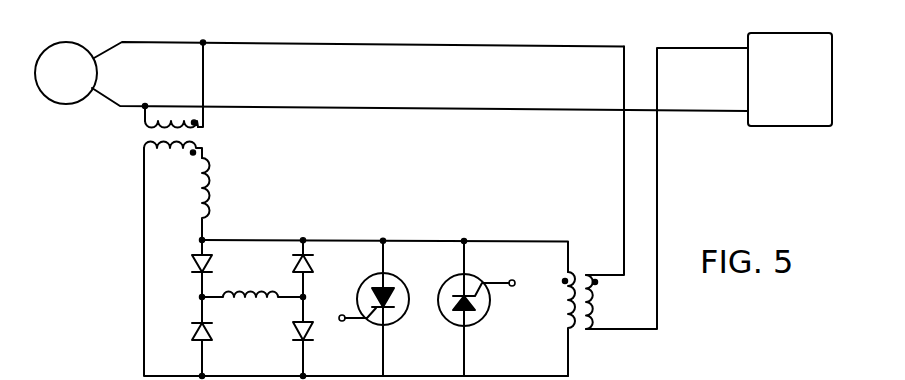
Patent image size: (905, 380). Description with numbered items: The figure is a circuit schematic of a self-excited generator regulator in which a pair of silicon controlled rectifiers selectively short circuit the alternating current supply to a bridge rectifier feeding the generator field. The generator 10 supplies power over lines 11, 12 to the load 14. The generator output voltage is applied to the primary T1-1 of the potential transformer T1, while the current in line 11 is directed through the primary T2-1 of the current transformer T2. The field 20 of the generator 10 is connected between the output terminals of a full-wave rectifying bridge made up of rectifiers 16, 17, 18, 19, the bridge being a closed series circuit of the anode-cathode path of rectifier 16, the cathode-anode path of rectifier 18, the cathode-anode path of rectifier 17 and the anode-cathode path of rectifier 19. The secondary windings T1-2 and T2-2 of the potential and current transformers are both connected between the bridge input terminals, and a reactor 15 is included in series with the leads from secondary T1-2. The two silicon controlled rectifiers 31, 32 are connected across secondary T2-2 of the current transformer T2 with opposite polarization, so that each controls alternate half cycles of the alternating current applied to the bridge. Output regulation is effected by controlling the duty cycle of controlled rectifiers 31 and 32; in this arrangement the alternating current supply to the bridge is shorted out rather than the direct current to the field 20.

The generator 10 is at (59, 36).
The line 11 is at (174, 36).
The line 12 is at (112, 106).
The load 14 is at (788, 33).
The reactor 15 is at (211, 185).
The rectifier 16 is at (189, 262).
The rectifier 17 is at (312, 338).
The rectifier 18 is at (190, 332).
The rectifier 19 is at (293, 266).
The field 20 is at (262, 341).
The silicon controlled rectifier 31 is at (406, 288).
The silicon controlled rectifier 32 is at (485, 315).
The potential transformer T1 is at (183, 139).
The primary winding of potential transformer T1-1 is at (204, 130).
The secondary winding of potential transformer T1-2 is at (205, 152).
The current transformer T2 is at (576, 312).
The primary winding of current transformer T2-1 is at (595, 296).
The secondary winding of current transformer T2-2 is at (566, 303).